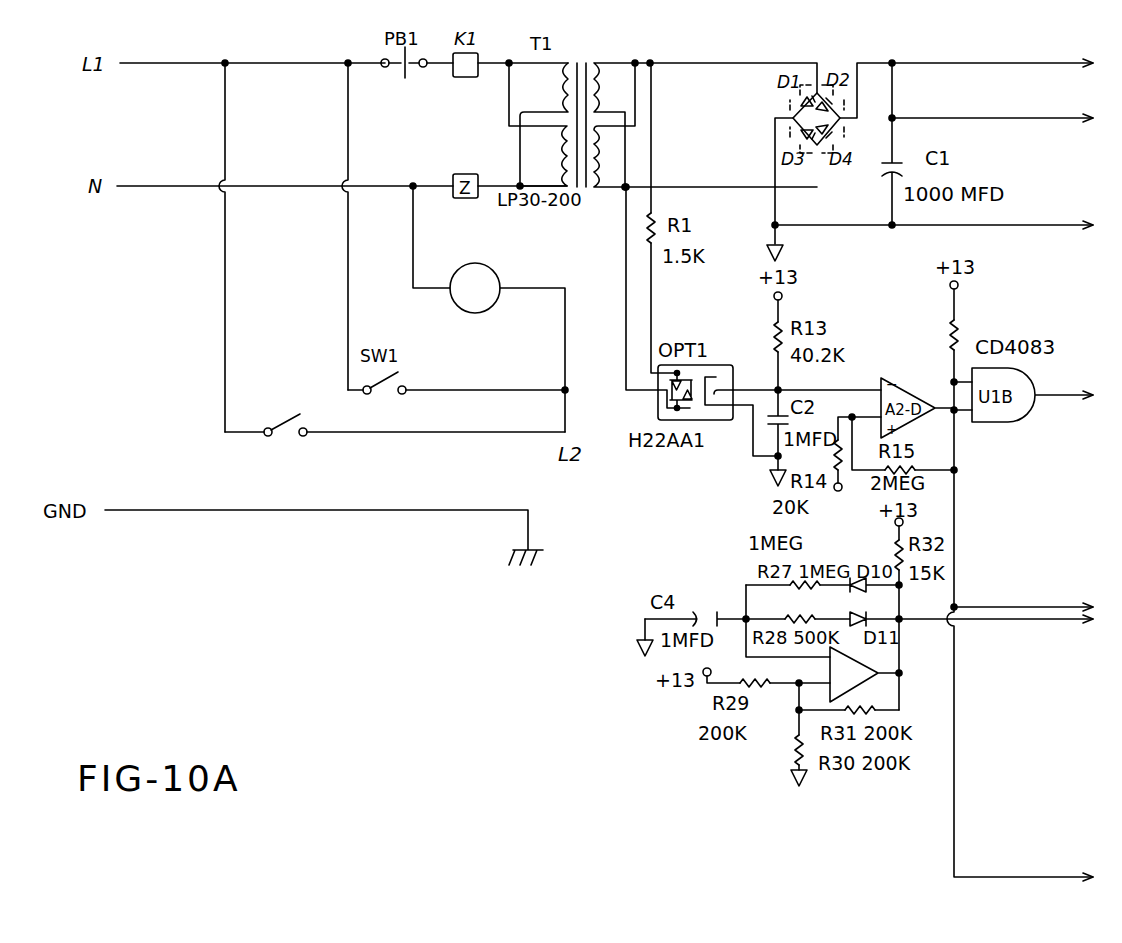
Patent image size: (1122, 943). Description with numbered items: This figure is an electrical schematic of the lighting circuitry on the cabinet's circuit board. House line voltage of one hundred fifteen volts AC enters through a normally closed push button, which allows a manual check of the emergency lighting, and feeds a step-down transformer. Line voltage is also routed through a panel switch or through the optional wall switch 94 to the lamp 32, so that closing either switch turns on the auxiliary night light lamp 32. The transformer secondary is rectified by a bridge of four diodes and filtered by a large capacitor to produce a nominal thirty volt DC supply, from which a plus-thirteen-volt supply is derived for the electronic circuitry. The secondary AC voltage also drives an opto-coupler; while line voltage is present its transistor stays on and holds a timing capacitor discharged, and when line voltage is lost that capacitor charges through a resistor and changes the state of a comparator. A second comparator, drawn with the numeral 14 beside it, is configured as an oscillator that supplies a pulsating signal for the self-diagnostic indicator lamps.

The lamp 32 is at (490, 266).
The optional wall switch 94 is at (310, 383).
The amplifier A2-C 14 is at (862, 675).